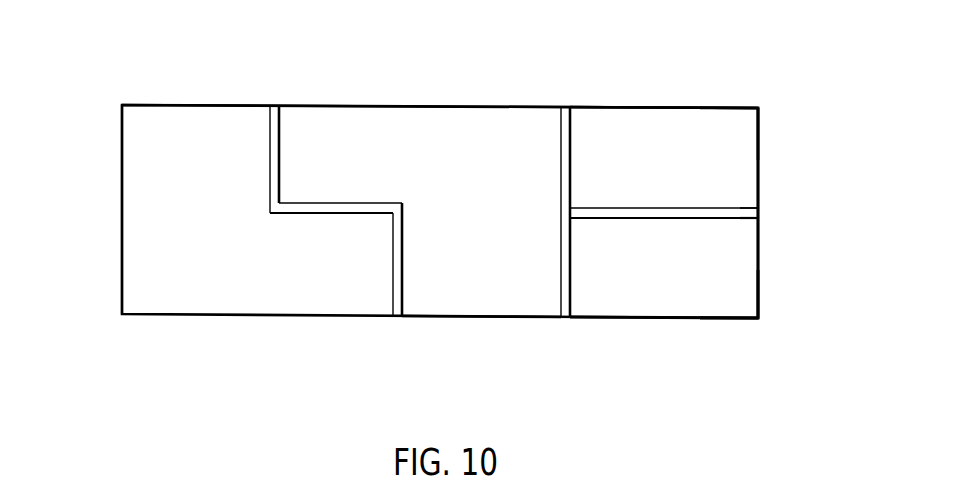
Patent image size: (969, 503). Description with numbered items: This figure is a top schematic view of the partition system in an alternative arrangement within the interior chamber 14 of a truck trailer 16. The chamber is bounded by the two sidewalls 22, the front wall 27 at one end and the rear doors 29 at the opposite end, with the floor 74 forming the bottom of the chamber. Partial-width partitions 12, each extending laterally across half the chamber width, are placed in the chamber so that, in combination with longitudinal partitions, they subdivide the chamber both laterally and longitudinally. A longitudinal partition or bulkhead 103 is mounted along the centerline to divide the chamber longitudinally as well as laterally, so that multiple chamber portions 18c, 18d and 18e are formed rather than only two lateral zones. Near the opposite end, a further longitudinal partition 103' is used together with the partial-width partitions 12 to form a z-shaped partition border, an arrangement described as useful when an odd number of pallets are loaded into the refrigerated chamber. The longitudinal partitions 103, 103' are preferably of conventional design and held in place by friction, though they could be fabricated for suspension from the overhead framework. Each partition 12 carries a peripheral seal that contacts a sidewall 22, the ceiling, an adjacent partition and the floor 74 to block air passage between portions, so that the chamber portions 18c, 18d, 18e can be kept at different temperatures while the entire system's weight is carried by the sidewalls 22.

The partial-width partition 12 is at (276, 128).
The interior chamber 14 is at (706, 122).
The truck trailer 16 is at (660, 100).
The chamber portion 18c is at (443, 292).
The chamber portion 18d is at (733, 302).
The chamber portion 18e is at (748, 138).
The sidewall 22 is at (601, 108).
The front wall 27 is at (758, 272).
The rear doors 29 is at (121, 272).
The floor 74 is at (758, 213).
The longitudinal partition 103 is at (690, 215).
The longitudinal partition 103' is at (336, 179).